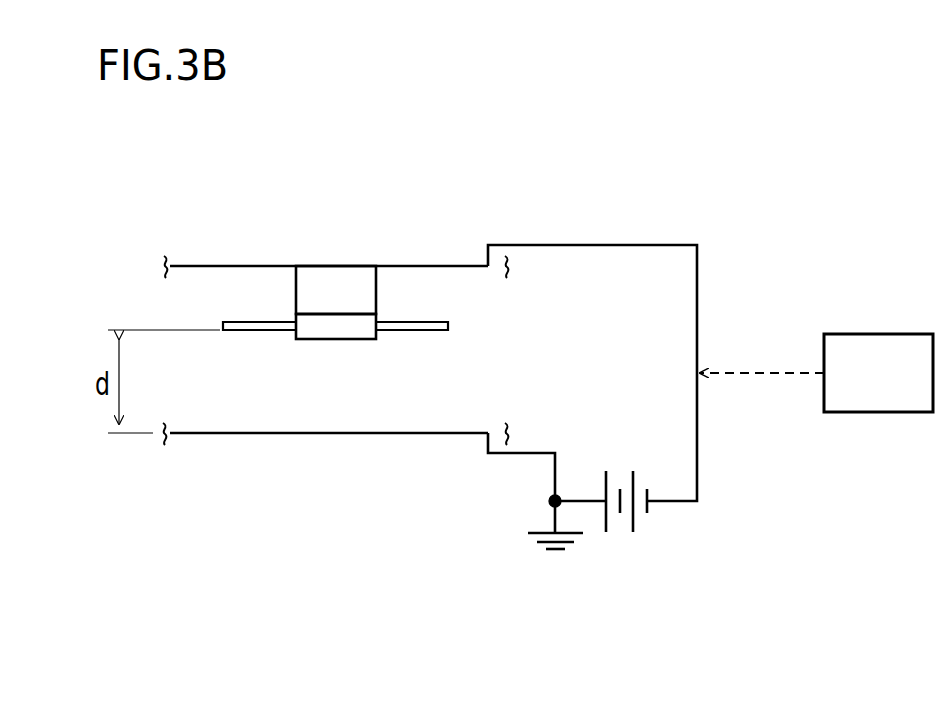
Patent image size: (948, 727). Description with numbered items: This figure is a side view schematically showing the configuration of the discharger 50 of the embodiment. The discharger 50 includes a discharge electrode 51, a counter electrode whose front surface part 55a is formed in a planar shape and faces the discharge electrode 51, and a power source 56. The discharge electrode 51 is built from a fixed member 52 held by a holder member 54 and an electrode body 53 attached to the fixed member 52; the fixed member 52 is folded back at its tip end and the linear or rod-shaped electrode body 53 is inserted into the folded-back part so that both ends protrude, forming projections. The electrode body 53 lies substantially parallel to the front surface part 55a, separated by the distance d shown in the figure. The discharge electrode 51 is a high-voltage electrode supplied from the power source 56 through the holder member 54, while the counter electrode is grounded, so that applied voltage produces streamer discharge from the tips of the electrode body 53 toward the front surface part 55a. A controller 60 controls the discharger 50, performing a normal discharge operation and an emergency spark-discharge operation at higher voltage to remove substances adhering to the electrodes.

The discharger 50 is at (405, 225).
The discharge electrode 51 is at (344, 346).
The fixed member 52 is at (296, 291).
The electrode body 53 is at (253, 333).
The holder member 54 is at (188, 270).
The front surface part 55a is at (222, 433).
The power source 56 is at (638, 540).
The controller 60 is at (882, 334).